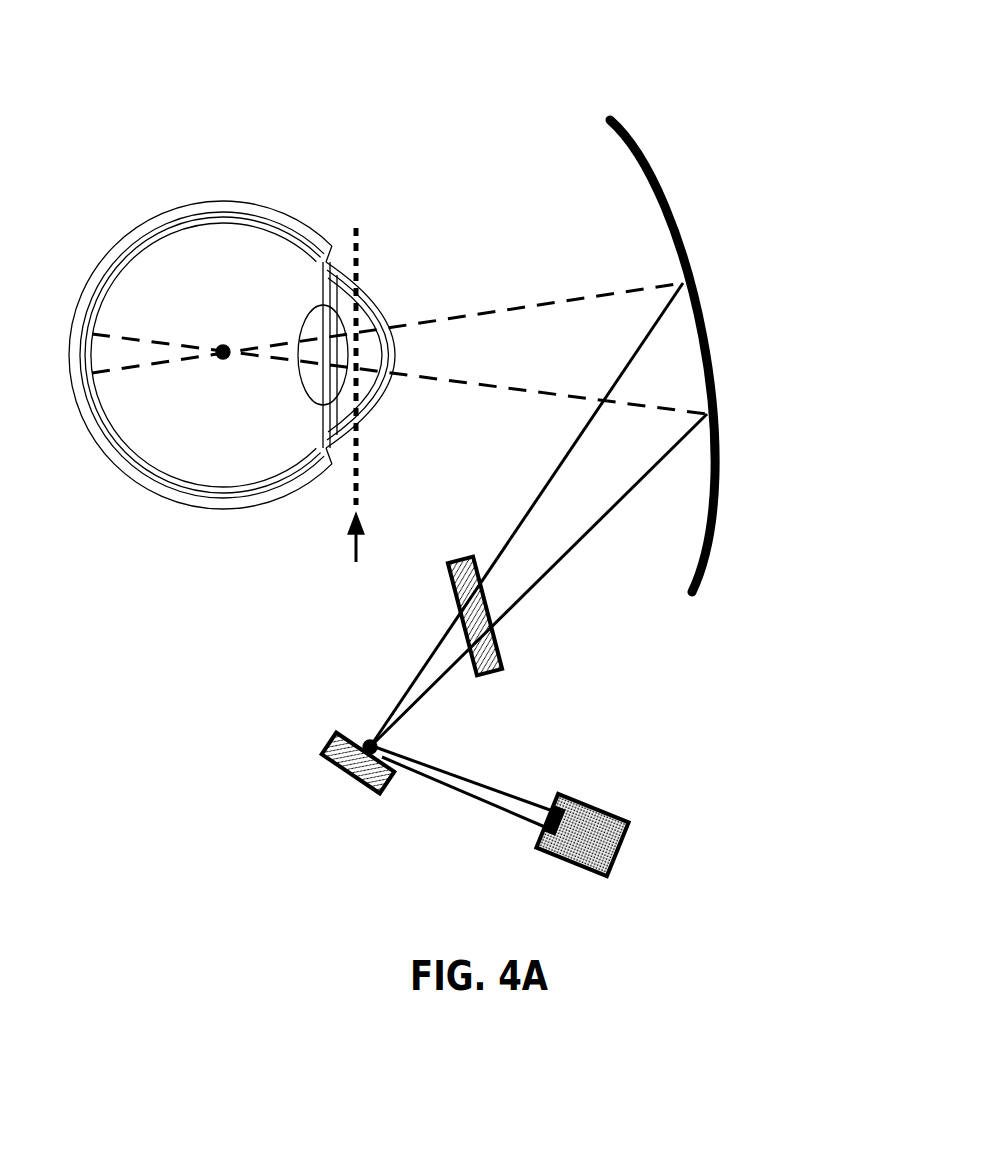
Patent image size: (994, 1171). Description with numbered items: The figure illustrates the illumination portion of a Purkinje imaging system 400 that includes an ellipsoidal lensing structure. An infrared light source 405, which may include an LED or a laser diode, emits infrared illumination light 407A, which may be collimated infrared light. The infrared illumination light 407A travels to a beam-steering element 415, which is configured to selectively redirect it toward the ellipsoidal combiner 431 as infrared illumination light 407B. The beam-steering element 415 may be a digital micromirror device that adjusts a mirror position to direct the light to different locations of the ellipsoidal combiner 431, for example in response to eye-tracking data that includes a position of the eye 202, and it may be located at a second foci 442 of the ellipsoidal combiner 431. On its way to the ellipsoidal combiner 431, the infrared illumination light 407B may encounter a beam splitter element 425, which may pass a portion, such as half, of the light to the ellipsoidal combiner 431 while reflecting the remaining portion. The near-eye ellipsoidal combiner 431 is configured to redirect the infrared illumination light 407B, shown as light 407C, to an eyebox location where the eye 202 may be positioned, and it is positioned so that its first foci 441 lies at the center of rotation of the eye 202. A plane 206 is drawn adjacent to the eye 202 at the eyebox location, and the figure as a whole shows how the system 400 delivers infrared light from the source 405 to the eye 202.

The Purkinje imaging system 400 is at (92, 37).
The eye 202 is at (258, 207).
The first foci 441 is at (223, 345).
The eyebox plane 206 is at (353, 409).
The ellipsoidal combiner 431 is at (638, 145).
The reflected light rays toward eye 407C is at (537, 302).
The infrared illumination light 407B is at (538, 487).
The beam splitter element 425 is at (463, 558).
The second foci 442 is at (367, 745).
The beam-steering element 415 is at (328, 745).
The infrared illumination light 407A is at (457, 778).
The infrared light source 405 is at (590, 808).